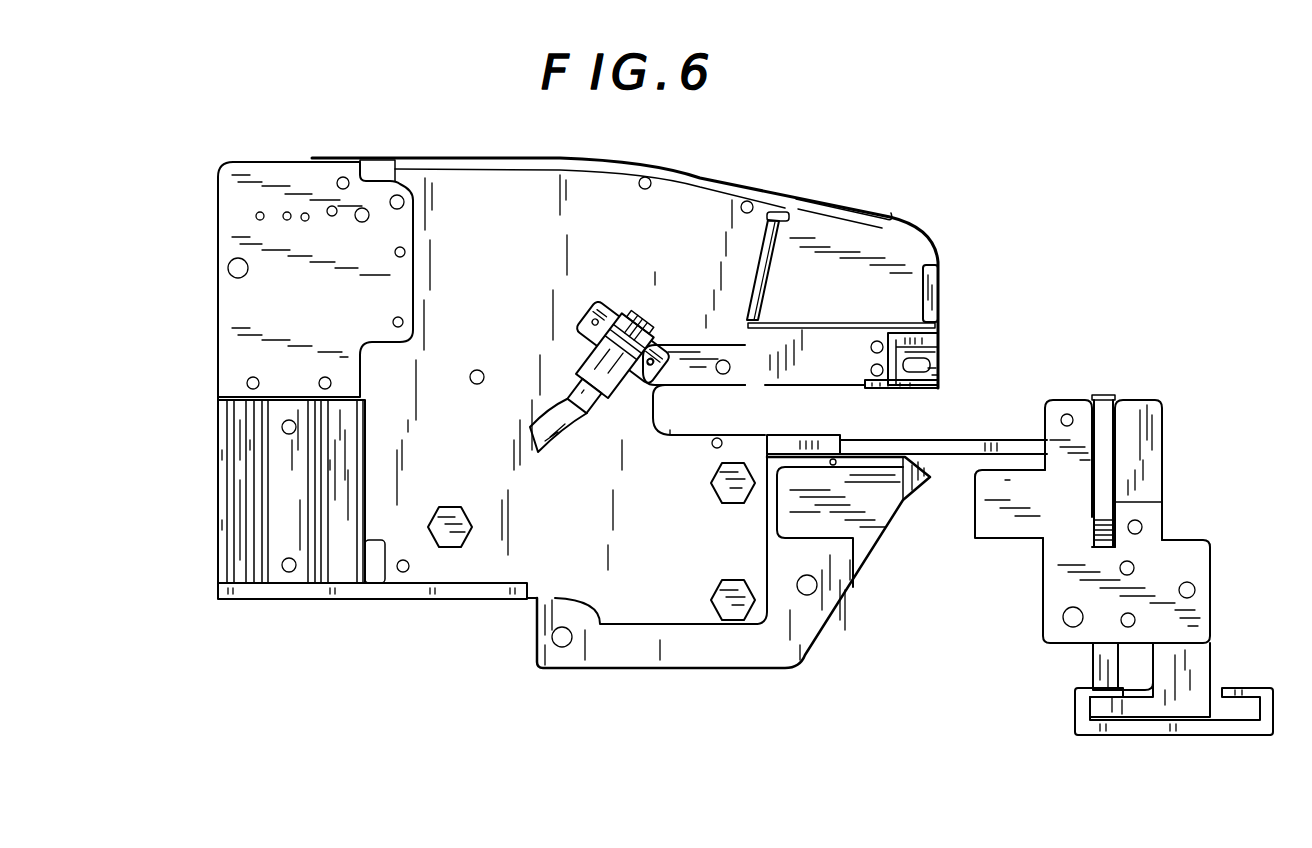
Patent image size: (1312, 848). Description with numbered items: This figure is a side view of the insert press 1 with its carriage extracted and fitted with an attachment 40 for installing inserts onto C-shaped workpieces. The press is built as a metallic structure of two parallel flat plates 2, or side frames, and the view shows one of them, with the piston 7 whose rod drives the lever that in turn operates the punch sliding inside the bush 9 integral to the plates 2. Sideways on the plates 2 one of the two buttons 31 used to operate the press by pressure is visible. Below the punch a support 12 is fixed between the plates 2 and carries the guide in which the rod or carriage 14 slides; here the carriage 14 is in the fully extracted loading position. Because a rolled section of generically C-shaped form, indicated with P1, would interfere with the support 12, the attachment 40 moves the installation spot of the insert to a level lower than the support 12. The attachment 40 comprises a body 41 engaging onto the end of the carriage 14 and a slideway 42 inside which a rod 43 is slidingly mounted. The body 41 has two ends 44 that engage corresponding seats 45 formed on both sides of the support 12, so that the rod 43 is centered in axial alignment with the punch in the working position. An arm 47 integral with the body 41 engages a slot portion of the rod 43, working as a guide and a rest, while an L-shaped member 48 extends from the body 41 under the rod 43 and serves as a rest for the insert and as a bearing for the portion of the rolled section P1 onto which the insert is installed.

The insert press 1 is at (871, 184).
The flat plate 2 is at (476, 157).
The piston 7 is at (233, 477).
The bush 9 is at (940, 365).
The support 12 is at (881, 521).
The carriage 14 is at (933, 444).
The button 31 is at (612, 320).
The attachment 40 is at (1123, 517).
The body 41 is at (1058, 590).
The slideway 42 is at (1118, 445).
The rod 43 is at (1103, 405).
The end 44 is at (1007, 522).
The seat 45 is at (800, 537).
The arm 47 is at (1145, 488).
The L-shaped member 48 is at (1193, 680).
The C-shaped rolled section P1 is at (1075, 712).